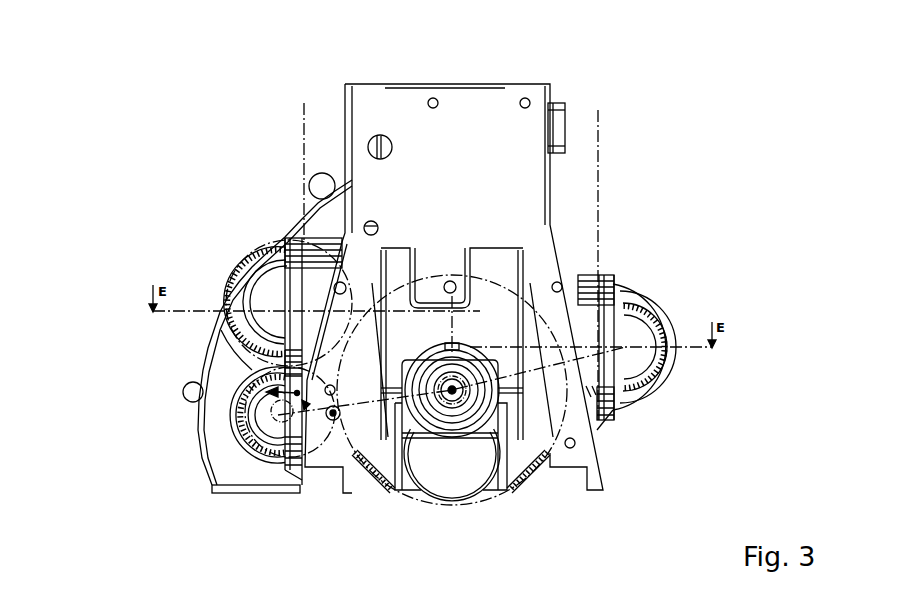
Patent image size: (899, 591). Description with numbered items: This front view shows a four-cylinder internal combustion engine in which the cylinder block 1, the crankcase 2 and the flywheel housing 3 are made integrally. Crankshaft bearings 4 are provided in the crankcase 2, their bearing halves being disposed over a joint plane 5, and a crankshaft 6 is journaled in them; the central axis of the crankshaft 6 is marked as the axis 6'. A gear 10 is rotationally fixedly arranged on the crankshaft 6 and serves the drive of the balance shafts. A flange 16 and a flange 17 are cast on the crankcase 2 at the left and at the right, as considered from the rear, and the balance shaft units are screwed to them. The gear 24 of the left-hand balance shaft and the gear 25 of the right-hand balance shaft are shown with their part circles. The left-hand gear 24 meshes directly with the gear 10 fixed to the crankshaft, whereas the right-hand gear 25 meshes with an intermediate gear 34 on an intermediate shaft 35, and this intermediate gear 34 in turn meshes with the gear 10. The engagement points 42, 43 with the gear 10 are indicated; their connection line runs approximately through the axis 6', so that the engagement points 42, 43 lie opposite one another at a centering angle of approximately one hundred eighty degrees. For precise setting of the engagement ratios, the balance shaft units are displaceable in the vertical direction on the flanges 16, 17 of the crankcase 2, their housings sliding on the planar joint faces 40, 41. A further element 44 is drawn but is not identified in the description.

The cylinder block 1 is at (510, 179).
The crankcase 2 is at (553, 260).
The flywheel housing 3 is at (290, 225).
The crankshaft bearings 4 is at (563, 362).
The joint plane 5 is at (398, 392).
The crankshaft 6 is at (393, 461).
The central axis of the crankshaft 6' is at (360, 461).
The gear fixed to the crankshaft 10 is at (517, 462).
The flange 16 is at (607, 319).
The flange 17 is at (318, 260).
The gear 24 is at (605, 405).
The gear 25 is at (328, 270).
The intermediate gear 34 is at (293, 365).
The intermediate shaft 35 is at (278, 415).
The planar joint face 40 is at (600, 120).
The planar joint face 41 is at (305, 124).
The engagement point 42 is at (588, 392).
The engagement point 43 is at (383, 387).
The direction of movement 44 is at (290, 394).